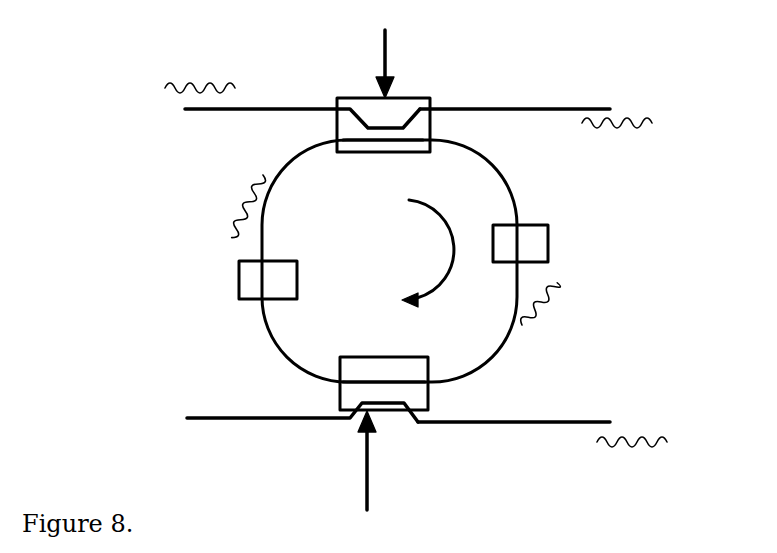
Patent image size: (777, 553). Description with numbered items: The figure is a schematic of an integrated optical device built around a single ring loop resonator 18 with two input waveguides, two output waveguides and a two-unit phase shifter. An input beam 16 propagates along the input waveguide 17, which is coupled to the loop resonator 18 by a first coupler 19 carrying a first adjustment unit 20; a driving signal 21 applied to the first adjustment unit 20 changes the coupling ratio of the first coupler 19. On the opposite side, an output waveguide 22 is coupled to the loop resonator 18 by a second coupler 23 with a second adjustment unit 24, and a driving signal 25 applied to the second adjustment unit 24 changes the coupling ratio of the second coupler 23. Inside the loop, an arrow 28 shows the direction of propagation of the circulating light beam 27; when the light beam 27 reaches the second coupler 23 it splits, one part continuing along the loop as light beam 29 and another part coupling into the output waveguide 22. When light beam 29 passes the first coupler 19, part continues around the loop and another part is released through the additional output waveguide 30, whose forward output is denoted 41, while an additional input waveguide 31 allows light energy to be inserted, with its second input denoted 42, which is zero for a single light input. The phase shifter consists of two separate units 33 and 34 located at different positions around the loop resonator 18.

The input beam 16 is at (187, 67).
The input waveguide 17 is at (302, 106).
The loop resonator 18 is at (389, 258).
The first coupler 19 is at (390, 140).
The first adjustment unit 20 is at (384, 114).
The driving signal 21 is at (374, 56).
The output waveguide 22 is at (302, 406).
The second coupler 23 is at (400, 385).
The second adjustment unit 24 is at (384, 398).
The driving signal 25 is at (382, 460).
The light beam 27 is at (550, 304).
The arrow 28 is at (428, 253).
The light beam 29 is at (237, 210).
The additional output waveguide 30 is at (515, 93).
The input waveguide 31 is at (514, 441).
The phase shifter unit 33 is at (537, 233).
The phase shifter unit 34 is at (253, 288).
The forward output 41 is at (629, 136).
The second input 42 is at (635, 432).